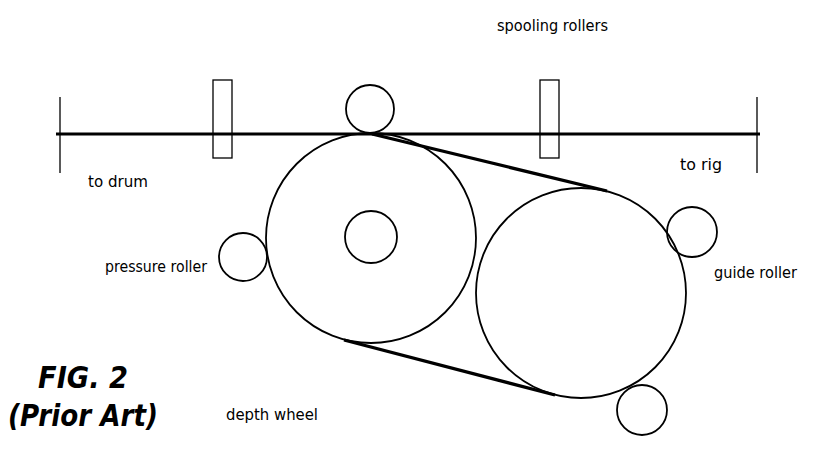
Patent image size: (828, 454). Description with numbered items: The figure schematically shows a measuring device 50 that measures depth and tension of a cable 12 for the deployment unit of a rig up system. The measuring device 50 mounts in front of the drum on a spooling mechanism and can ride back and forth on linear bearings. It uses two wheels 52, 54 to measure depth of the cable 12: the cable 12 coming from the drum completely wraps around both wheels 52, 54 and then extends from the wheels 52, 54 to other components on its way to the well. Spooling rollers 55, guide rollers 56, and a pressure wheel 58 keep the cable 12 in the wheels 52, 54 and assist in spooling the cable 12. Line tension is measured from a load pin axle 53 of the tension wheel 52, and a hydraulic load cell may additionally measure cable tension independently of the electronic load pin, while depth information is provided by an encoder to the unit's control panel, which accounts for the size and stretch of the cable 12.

The measuring device 50 is at (31, 91).
The cable 12 is at (145, 131).
The spooling rollers 55 is at (222, 80).
The guide rollers 56 is at (365, 85).
The tension wheel 52 is at (313, 326).
The load pin axle 53 is at (360, 262).
The wheel 54 is at (548, 395).
The pressure wheel 58 is at (233, 280).